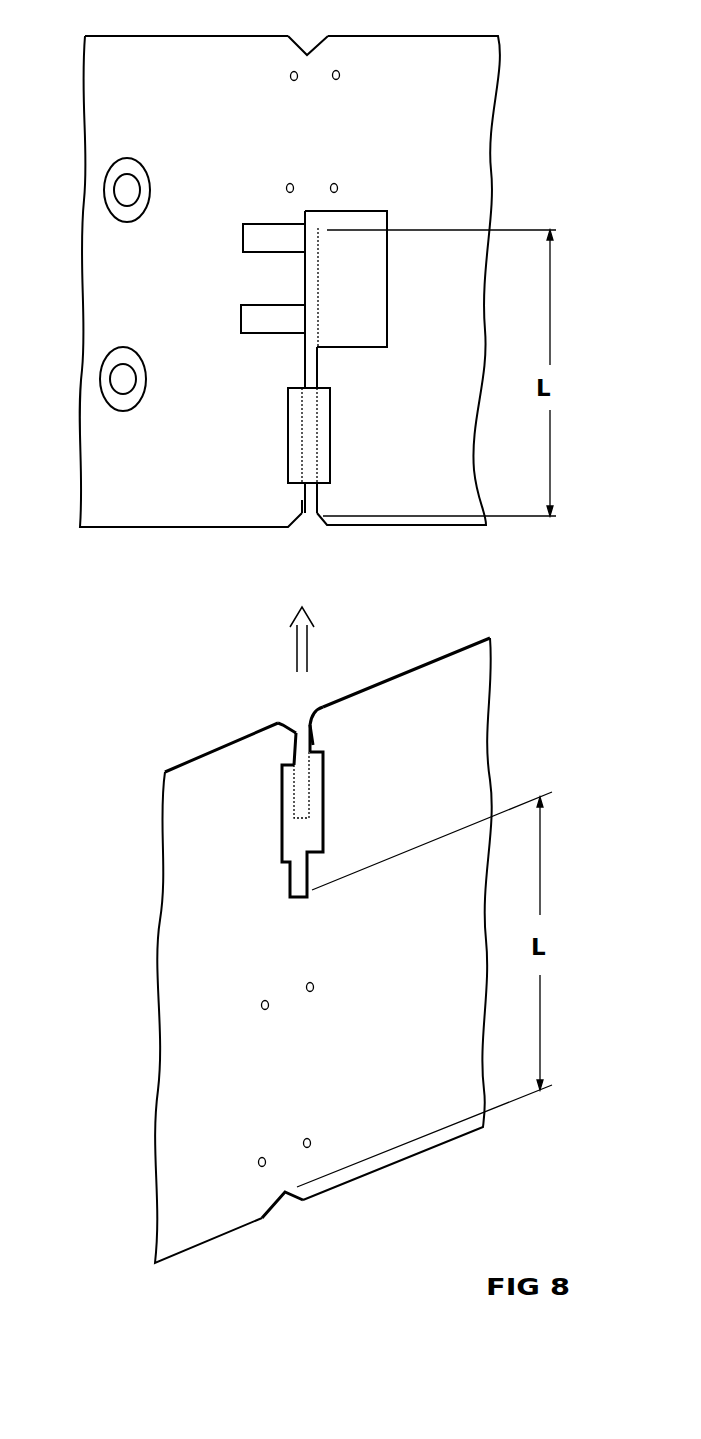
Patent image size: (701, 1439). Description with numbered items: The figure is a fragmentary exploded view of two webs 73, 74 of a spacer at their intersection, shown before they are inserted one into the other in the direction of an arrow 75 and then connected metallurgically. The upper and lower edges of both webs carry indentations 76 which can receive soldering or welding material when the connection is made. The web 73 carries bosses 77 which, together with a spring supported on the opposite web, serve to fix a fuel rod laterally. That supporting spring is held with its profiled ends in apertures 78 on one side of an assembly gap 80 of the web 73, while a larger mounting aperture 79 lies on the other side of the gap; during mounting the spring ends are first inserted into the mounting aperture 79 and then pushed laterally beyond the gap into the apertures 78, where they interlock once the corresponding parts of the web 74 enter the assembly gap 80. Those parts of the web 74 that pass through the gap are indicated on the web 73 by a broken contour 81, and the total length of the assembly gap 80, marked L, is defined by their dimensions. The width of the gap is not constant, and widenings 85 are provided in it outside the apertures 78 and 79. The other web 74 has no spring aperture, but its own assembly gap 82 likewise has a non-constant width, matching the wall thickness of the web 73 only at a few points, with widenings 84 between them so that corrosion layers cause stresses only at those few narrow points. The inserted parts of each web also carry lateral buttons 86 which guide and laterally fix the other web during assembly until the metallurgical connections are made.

The web 73 is at (207, 493).
The web 74 is at (205, 1215).
The arrow 75 is at (308, 655).
The indentations 76 is at (305, 43).
The bosses 77 is at (148, 170).
The apertures 78 is at (253, 238).
The mounting aperture 79 is at (358, 285).
The assembly gap 80 is at (308, 500).
The broken contour 81 is at (322, 410).
The assembly gap 82 is at (300, 743).
The widenings 84 is at (287, 840).
The widenings 85 is at (290, 438).
The lateral buttons 86 is at (342, 76).